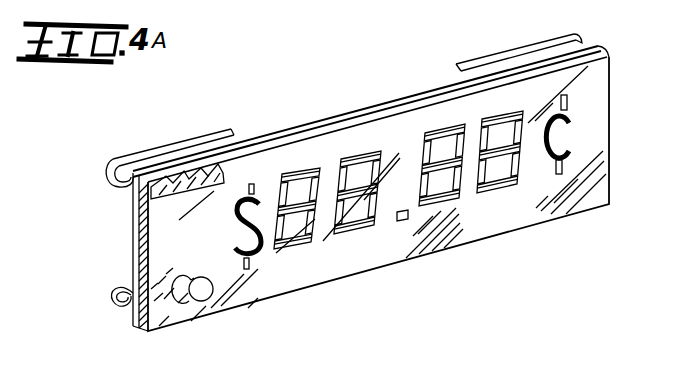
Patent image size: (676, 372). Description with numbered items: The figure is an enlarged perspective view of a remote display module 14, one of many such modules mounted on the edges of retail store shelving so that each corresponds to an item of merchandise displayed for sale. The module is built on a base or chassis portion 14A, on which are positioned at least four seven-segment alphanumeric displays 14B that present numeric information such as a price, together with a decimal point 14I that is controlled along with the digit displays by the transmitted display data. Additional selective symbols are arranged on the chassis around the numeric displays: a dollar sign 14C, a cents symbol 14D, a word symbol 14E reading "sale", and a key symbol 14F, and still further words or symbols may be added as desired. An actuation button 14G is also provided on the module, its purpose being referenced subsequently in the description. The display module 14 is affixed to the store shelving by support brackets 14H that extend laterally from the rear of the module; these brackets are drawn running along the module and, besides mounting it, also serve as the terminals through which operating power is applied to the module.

The remote display module 14 is at (316, 73).
The base or chassis portion 14A is at (487, 214).
The 7-segment alphanumeric displays 14B is at (348, 154).
The dollar sign 14C is at (254, 256).
The cents symbol 14D is at (575, 136).
The "sale" word symbol 14E is at (151, 255).
The key symbol 14F is at (152, 214).
The actuation button 14G is at (203, 298).
The support brackets 14H is at (148, 157).
The decimal point 14I is at (405, 219).